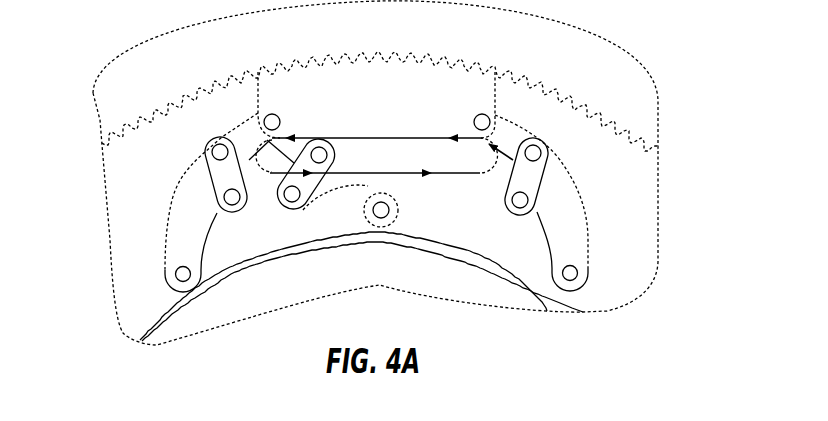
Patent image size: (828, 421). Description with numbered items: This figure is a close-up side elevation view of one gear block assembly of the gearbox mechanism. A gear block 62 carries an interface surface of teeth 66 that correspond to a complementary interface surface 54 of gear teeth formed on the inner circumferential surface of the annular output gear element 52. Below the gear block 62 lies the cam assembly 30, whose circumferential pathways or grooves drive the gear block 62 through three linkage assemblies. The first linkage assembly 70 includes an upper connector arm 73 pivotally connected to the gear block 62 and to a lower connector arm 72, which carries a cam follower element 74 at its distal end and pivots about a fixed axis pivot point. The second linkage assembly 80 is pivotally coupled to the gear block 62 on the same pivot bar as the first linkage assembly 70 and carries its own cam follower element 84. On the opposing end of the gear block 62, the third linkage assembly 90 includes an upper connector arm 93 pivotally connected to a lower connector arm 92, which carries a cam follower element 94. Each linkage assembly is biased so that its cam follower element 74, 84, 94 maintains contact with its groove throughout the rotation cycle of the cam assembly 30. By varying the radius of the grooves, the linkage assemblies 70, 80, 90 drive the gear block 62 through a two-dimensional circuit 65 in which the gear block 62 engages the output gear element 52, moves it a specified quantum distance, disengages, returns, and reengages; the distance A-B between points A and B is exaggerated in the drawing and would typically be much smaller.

The cam assembly 30 is at (345, 278).
The output gear element 52 is at (390, 40).
The complementary interface surface 54 is at (639, 150).
The gear block 62 is at (324, 103).
The two-dimensional circuit 65 is at (401, 148).
The teeth 66 is at (460, 74).
The first linkage assembly 70 is at (162, 209).
The lower connector arm 72 is at (197, 178).
The upper connector arm 73 is at (246, 135).
The cam follower element 74 is at (203, 262).
The second linkage assembly 80 is at (365, 188).
The cam follower element 84 is at (413, 220).
The third linkage assembly 90 is at (594, 216).
The lower connector arm 92 is at (563, 182).
The upper connector arm 93 is at (507, 133).
The cam follower element 94 is at (590, 279).
The circuit endpoint A is at (477, 160).
The circuit endpoint B is at (278, 148).